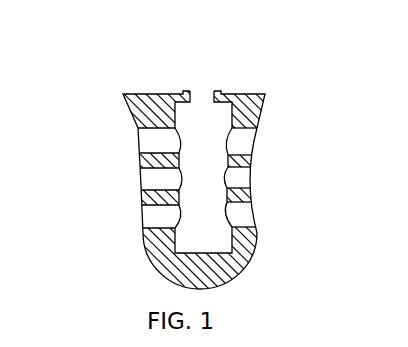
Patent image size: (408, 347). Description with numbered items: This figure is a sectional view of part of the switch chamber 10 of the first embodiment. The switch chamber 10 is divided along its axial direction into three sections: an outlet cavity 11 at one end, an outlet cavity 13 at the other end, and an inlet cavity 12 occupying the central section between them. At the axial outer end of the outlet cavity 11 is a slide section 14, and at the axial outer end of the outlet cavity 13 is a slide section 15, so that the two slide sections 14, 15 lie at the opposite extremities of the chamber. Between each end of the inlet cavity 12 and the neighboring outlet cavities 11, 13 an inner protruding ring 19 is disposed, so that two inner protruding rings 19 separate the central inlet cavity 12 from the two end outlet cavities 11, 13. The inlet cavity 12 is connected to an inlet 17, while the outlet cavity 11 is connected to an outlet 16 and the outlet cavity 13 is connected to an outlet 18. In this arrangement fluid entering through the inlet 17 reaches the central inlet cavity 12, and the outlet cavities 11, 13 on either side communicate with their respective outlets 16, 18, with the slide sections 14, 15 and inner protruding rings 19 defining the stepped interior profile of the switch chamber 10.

The switch chamber 10 is at (200, 80).
The outlet cavity 11 is at (180, 136).
The inlet cavity 12 is at (181, 181).
The outlet cavity 13 is at (181, 221).
The slide section 14 is at (213, 118).
The slide section 15 is at (208, 243).
The outlet 16 is at (243, 143).
The inlet 17 is at (240, 178).
The outlet 18 is at (242, 218).
The inner protruding ring 19 is at (179, 165).